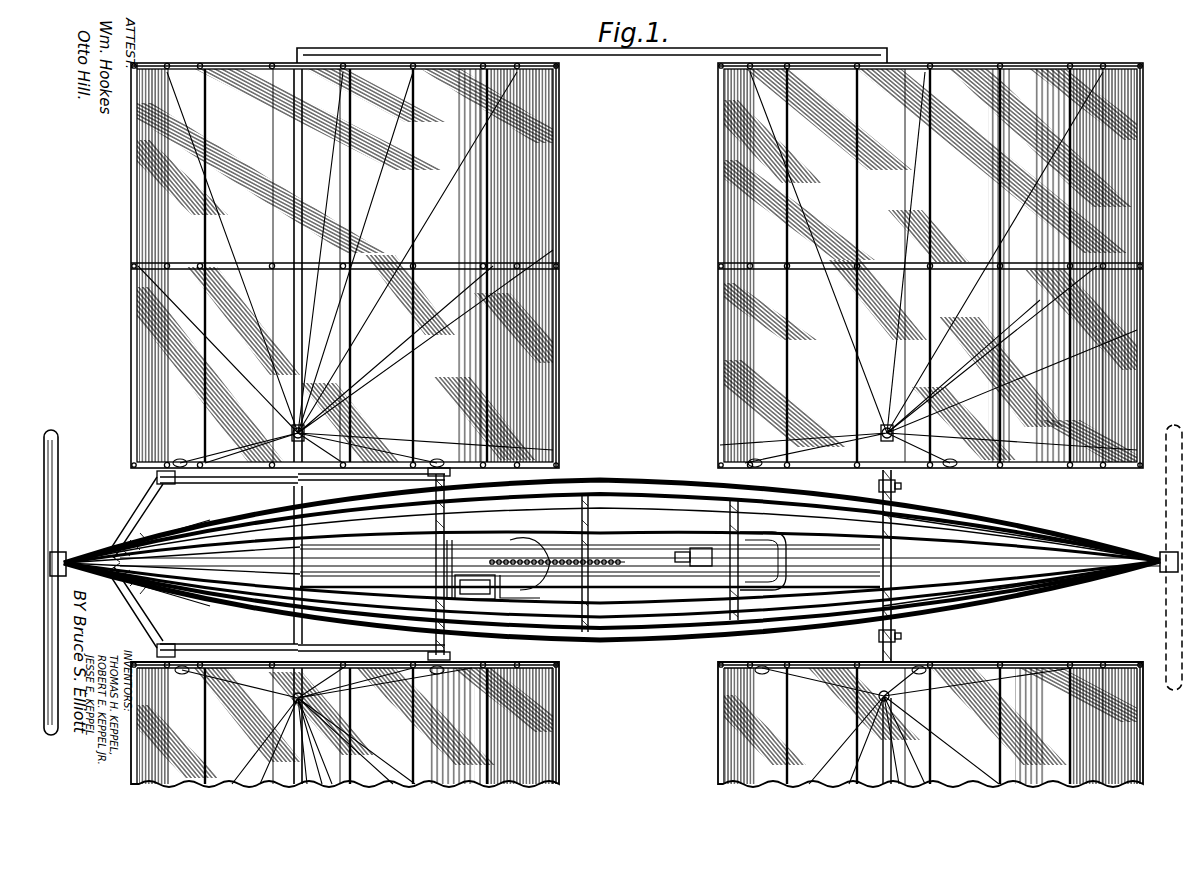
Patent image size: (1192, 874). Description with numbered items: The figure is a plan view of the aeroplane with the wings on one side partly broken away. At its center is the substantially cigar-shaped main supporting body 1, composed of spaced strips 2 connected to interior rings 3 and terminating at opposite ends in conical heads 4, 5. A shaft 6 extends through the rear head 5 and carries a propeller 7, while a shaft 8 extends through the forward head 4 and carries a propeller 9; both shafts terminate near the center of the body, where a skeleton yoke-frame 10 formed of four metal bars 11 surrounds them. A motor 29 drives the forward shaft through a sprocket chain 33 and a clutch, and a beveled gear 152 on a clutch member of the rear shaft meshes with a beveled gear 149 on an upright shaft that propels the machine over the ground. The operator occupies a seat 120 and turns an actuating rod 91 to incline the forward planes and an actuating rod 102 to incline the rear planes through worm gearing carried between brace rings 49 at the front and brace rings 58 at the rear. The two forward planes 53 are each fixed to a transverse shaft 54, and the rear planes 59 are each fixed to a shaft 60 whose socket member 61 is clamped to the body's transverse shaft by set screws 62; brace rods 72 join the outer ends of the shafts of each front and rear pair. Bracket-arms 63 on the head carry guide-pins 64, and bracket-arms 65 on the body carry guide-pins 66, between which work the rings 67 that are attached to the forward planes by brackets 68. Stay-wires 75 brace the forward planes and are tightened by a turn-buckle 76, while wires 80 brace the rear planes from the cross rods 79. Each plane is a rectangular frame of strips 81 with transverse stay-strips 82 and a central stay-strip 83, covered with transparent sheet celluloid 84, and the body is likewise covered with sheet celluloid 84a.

The main supporting body 1 is at (602, 500).
The strips 2 is at (540, 497).
The rings 3 is at (640, 492).
The conical head 4 is at (86, 550).
The conical head 5 is at (1123, 546).
The shaft 6 is at (1164, 556).
The propeller 7 is at (1168, 575).
The shaft 8 is at (82, 560).
The propeller 9 is at (59, 452).
The skeleton yoke-frame 10 is at (762, 577).
The bars of metal 11 is at (665, 533).
The motor 29 is at (520, 586).
The sprocket chain 33 is at (605, 582).
The brace rings 49 is at (294, 553).
The forward planes 53 is at (561, 194).
The transverse shaft 54 is at (293, 197).
The brace rings 58 is at (920, 533).
The rear planes 59 is at (1143, 190).
The shaft 60 is at (892, 118).
The socket member 61 is at (898, 478).
The set screws 62 is at (902, 487).
The bracket-arms 63 is at (147, 507).
The guide-pins 64 is at (163, 486).
The bracket-arms 65 is at (452, 477).
The guide-pins 66 is at (416, 502).
The rings 67 is at (217, 481).
The brackets 68 is at (183, 459).
The brace rods 72 is at (547, 48).
The stay-wires 75 is at (218, 334).
The turn-buckle 76 is at (287, 443).
The cross rods 79 is at (873, 498).
The wires 80 is at (907, 241).
The strips 81 is at (262, 58).
The transverse stay-strips 82 is at (409, 188).
The central stay-strip 83 is at (372, 266).
The sheet celluloid 84 is at (500, 271).
The sheet celluloid 84a is at (556, 447).
The actuating rod 91 is at (346, 579).
The actuating rod 102 is at (350, 547).
The seat 120 is at (471, 570).
The beveled gear 149 is at (764, 546).
The beveled gear 152 is at (717, 552).